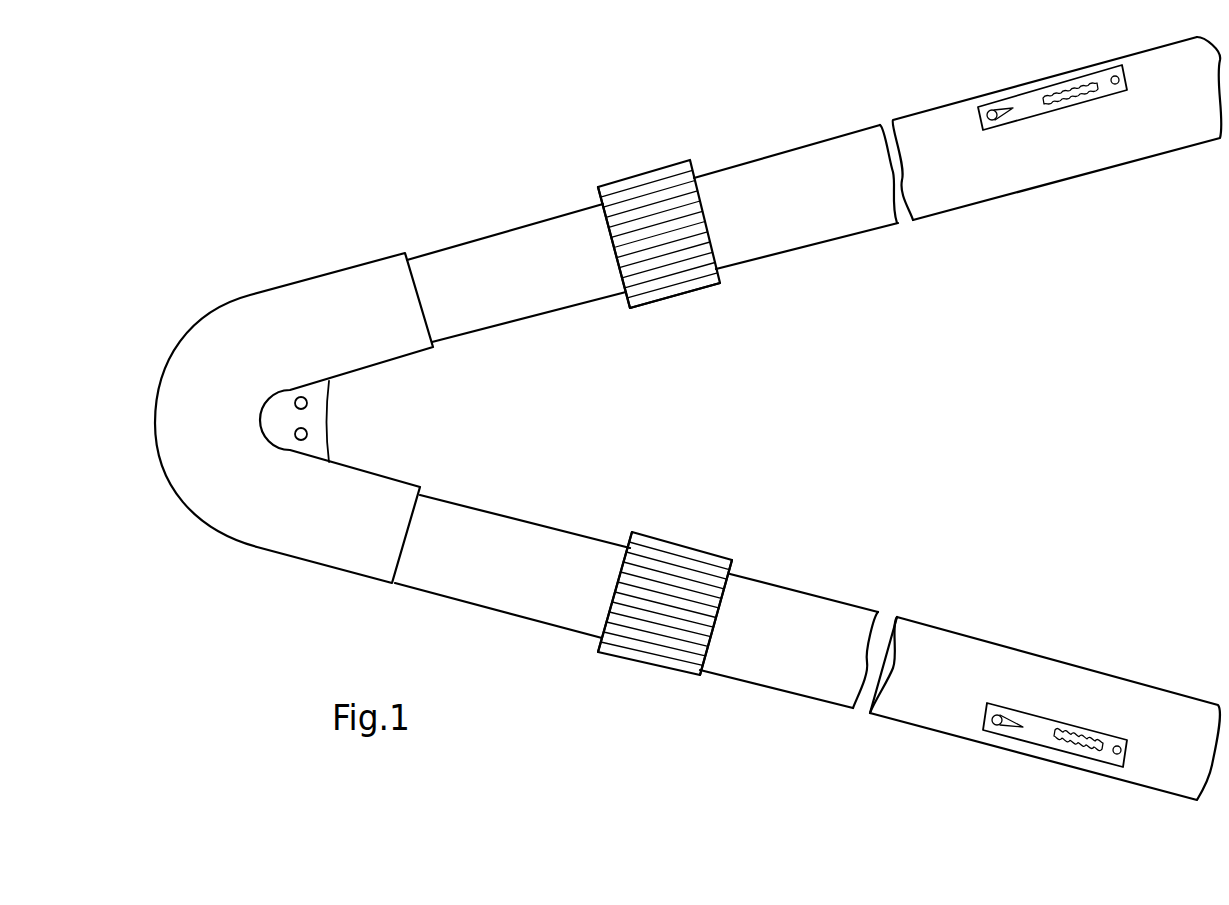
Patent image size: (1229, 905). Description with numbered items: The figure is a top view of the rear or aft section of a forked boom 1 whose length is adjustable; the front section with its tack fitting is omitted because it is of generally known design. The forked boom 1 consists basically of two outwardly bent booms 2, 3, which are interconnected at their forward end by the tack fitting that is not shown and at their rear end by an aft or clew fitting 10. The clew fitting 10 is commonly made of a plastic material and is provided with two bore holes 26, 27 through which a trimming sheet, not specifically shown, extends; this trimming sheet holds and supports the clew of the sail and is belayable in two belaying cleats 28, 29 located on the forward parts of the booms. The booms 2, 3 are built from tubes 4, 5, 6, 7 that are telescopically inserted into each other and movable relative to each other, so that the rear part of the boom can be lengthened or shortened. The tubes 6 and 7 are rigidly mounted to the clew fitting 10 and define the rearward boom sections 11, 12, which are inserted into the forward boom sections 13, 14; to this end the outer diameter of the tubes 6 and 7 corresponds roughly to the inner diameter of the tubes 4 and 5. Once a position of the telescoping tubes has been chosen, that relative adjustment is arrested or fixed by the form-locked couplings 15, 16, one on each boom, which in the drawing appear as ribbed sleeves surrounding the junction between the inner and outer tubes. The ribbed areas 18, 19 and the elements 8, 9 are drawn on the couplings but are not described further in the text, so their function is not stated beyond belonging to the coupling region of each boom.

The forked boom 1 is at (782, 148).
The boom 2 is at (938, 120).
The boom 3 is at (783, 692).
The tube 4 is at (792, 247).
The tube 5 is at (810, 600).
The tube 6 is at (443, 250).
The tube 7 is at (440, 495).
The upper coupling sleeve 8 is at (673, 297).
The lower coupling sleeve 9 is at (657, 537).
The clew fitting 10 is at (268, 293).
The rearward boom section 11 is at (468, 588).
The rearward boom section 12 is at (515, 310).
The forward boom section 13 is at (937, 625).
The forward boom section 14 is at (958, 203).
The form-locked coupling 15 is at (593, 643).
The form-locked coupling 16 is at (597, 192).
The upper ribbed sleeve 18 is at (648, 188).
The lower ribbed sleeve 19 is at (682, 585).
The bore hole 26 is at (307, 403).
The bore hole 27 is at (307, 435).
The belaying cleat 28 is at (1027, 103).
The belaying cleat 29 is at (1040, 725).